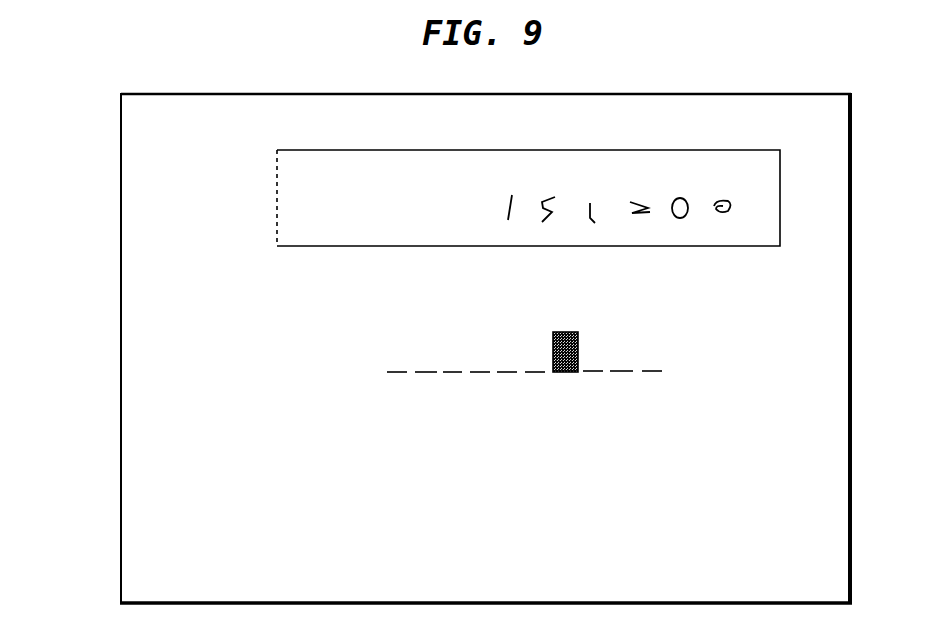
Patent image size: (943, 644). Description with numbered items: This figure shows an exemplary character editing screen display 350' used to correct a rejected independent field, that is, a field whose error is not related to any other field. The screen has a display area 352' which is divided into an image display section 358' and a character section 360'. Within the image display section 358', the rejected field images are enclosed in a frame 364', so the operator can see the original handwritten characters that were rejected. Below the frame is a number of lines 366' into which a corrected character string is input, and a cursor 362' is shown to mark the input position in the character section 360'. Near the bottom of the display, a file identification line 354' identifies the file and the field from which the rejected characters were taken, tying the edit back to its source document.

The character editing screen display 350' is at (465, 348).
The display area 352' is at (514, 348).
The file identification line 354' is at (295, 555).
The image display section 358' is at (545, 183).
The character section 360' is at (621, 387).
The cursor 362' is at (577, 387).
The frame 364' is at (242, 183).
The lines 366' is at (375, 392).